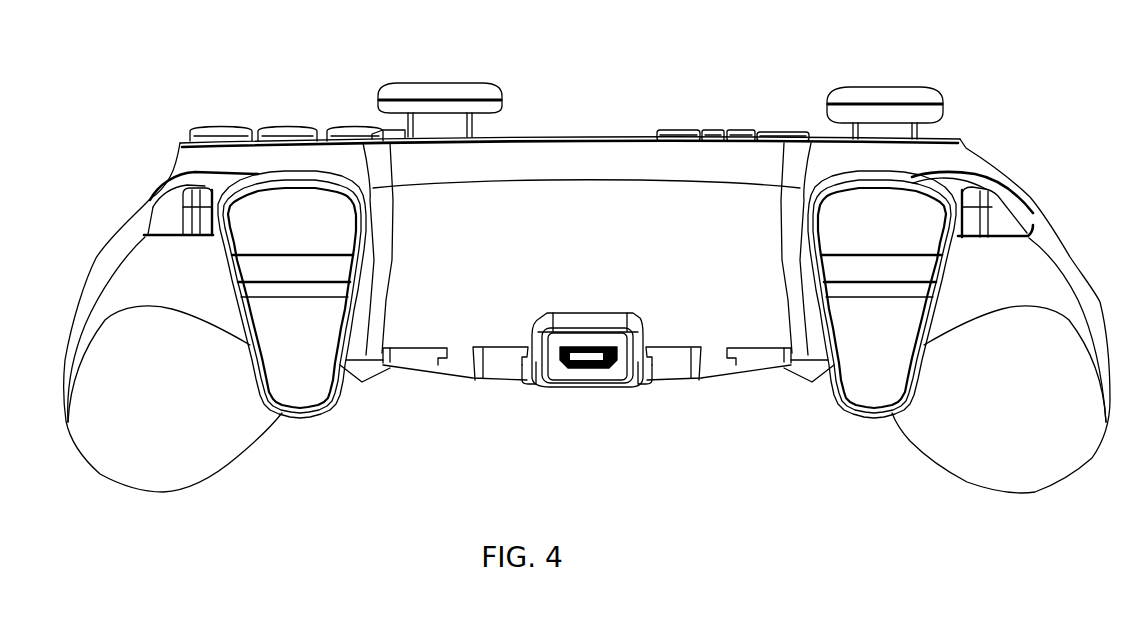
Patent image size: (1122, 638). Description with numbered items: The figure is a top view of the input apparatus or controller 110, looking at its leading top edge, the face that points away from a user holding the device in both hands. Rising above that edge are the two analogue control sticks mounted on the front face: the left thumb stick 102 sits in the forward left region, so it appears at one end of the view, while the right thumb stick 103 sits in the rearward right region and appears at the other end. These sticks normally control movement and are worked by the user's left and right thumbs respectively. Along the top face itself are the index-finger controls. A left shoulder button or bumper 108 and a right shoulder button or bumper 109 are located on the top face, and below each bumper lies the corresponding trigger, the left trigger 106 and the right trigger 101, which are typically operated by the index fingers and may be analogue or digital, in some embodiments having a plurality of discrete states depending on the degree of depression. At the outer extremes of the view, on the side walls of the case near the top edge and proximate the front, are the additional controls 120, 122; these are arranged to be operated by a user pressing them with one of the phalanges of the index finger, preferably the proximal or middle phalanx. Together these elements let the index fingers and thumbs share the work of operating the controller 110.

The controller 110 is at (158, 68).
The right thumb stick 103 is at (443, 88).
The left thumb stick 102 is at (885, 90).
The right shoulder button 109 is at (286, 204).
The right trigger 101 is at (316, 371).
The left shoulder button 108 is at (920, 210).
The left trigger 106 is at (856, 371).
The additional control 122 is at (163, 215).
The additional control 120 is at (1013, 215).